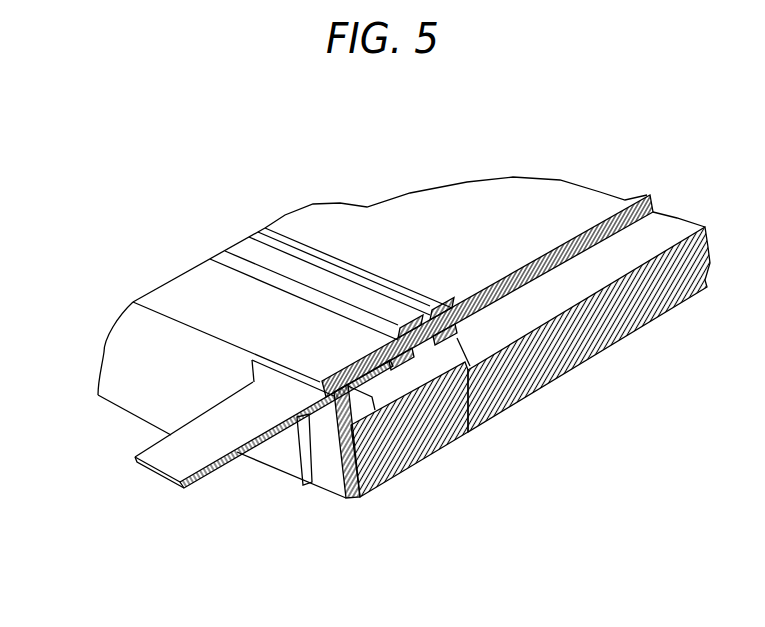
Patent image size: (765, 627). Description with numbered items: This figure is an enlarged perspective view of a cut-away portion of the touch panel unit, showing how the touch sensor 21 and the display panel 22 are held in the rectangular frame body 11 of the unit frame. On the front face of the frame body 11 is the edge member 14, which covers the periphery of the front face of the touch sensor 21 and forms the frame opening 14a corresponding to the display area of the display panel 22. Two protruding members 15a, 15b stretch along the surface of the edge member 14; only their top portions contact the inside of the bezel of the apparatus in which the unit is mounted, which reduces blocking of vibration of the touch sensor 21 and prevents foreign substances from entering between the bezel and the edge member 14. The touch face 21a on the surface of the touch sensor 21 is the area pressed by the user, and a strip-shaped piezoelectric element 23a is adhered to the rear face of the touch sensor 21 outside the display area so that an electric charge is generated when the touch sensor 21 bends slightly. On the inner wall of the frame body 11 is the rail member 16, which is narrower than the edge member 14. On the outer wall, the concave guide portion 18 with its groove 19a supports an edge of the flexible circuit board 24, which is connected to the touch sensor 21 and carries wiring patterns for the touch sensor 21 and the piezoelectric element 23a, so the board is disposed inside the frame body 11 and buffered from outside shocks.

The frame body 11 is at (152, 365).
The edge member 14 is at (217, 275).
The frame opening 14a is at (455, 313).
The protruding member 15a is at (260, 270).
The protruding member 15b is at (332, 267).
The rail member 16 is at (372, 425).
The guide portion 18 is at (325, 506).
The groove 19a is at (302, 421).
The touch sensor 21 is at (607, 220).
The touch face 21a is at (463, 200).
The display panel 22 is at (647, 313).
The piezoelectric element 23a is at (447, 350).
The flexible circuit board 24 is at (172, 448).